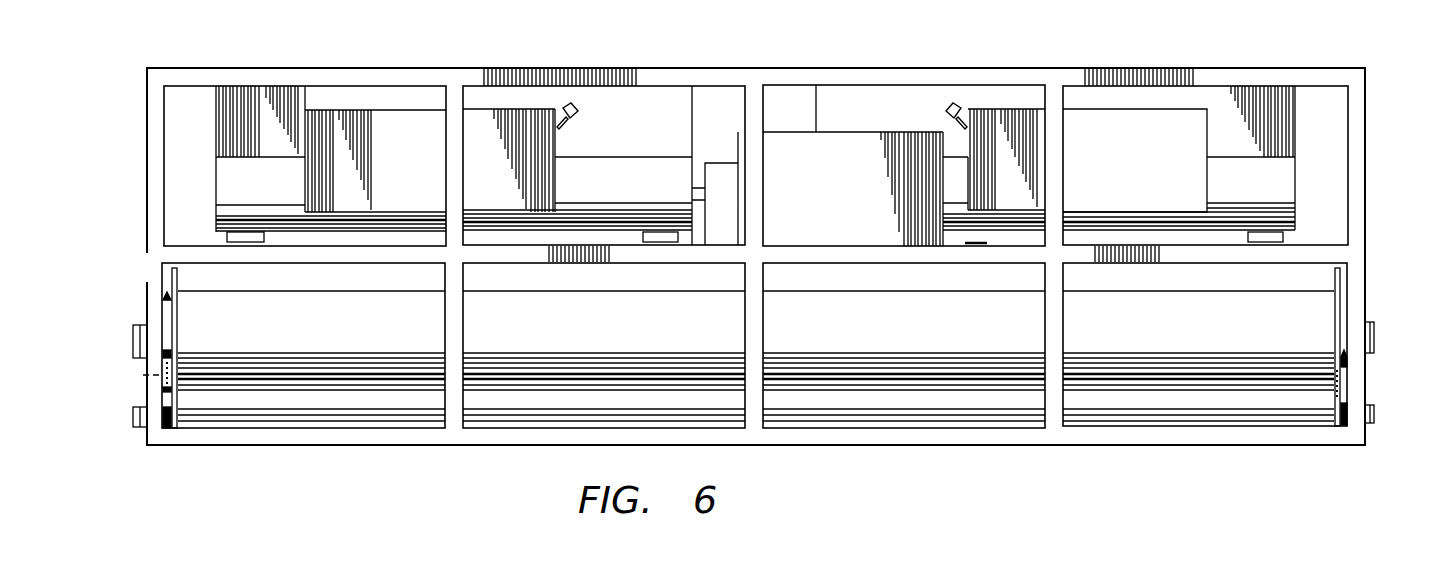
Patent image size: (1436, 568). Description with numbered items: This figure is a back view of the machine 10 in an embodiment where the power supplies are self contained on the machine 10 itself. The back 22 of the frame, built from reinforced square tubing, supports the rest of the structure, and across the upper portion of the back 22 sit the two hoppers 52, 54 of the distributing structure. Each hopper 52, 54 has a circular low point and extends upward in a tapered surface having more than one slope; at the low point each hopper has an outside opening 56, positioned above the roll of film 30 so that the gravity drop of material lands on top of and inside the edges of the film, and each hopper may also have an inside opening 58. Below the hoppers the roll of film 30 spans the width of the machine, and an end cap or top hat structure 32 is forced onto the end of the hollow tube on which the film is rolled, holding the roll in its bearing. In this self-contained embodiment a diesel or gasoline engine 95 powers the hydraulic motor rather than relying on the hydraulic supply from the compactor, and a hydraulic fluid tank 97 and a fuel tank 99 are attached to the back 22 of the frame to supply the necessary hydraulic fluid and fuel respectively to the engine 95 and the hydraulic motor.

The machine 10 is at (998, 462).
The back 22 is at (860, 435).
The roll of film 30 is at (818, 343).
The end cap or top hat structure 32 is at (1342, 301).
The hopper 52 is at (1235, 127).
The hopper 54 is at (288, 108).
The outside opening 56 is at (248, 244).
The inside opening 58 is at (661, 243).
The engine 95 is at (849, 178).
The hydraulic fluid tank 97 is at (397, 127).
The fuel tank 99 is at (1140, 127).